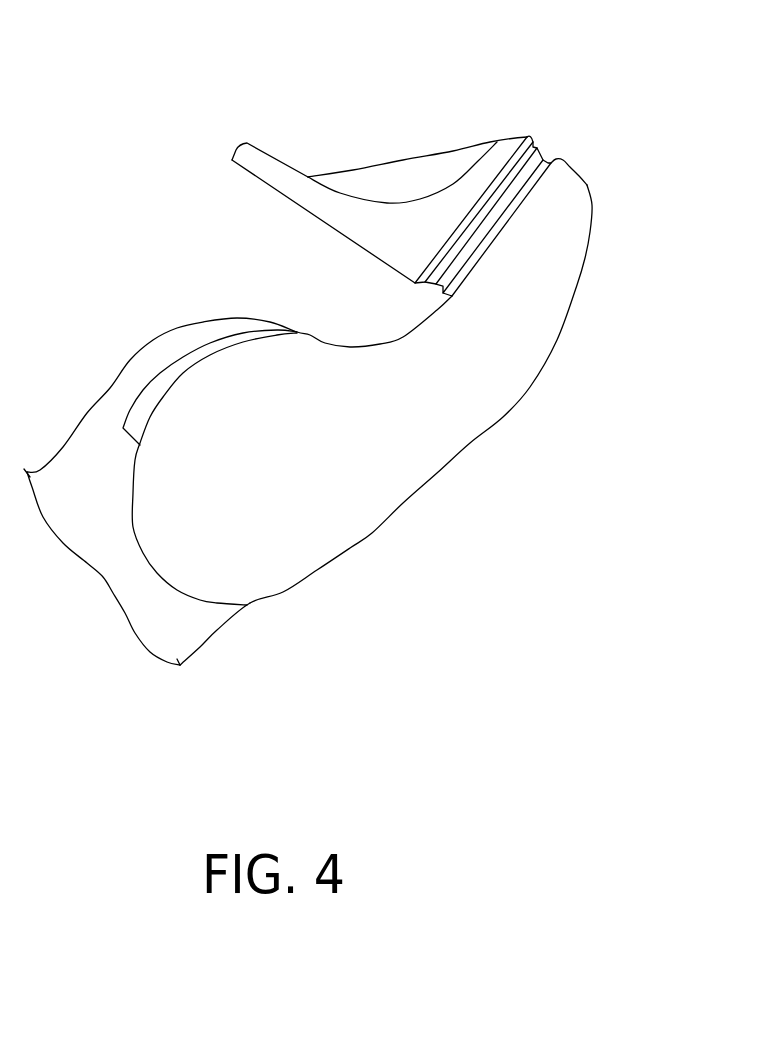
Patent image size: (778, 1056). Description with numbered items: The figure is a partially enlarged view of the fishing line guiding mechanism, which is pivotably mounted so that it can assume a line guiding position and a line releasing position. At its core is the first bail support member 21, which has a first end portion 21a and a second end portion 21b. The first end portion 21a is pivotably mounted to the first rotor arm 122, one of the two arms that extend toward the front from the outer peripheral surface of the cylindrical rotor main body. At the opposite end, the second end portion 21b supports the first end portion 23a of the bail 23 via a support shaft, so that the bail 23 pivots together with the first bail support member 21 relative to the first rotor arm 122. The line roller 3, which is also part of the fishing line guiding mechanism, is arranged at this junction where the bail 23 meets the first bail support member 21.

The first bail support member 21 is at (448, 482).
The first end portion 21a is at (277, 558).
The second end portion 21b is at (570, 168).
The line roller 3 is at (543, 158).
The bail 23 is at (252, 162).
The first end portion 23a is at (510, 150).
The first rotor arm 122 is at (195, 620).